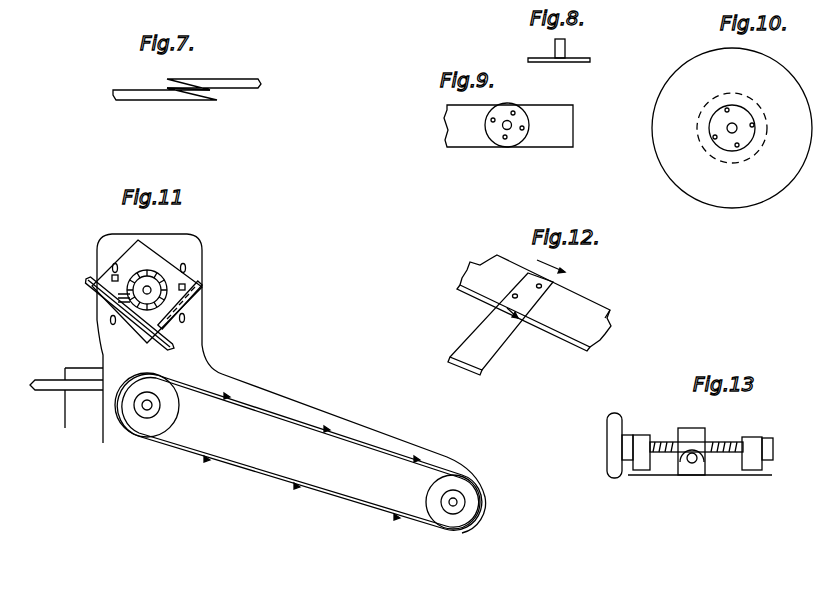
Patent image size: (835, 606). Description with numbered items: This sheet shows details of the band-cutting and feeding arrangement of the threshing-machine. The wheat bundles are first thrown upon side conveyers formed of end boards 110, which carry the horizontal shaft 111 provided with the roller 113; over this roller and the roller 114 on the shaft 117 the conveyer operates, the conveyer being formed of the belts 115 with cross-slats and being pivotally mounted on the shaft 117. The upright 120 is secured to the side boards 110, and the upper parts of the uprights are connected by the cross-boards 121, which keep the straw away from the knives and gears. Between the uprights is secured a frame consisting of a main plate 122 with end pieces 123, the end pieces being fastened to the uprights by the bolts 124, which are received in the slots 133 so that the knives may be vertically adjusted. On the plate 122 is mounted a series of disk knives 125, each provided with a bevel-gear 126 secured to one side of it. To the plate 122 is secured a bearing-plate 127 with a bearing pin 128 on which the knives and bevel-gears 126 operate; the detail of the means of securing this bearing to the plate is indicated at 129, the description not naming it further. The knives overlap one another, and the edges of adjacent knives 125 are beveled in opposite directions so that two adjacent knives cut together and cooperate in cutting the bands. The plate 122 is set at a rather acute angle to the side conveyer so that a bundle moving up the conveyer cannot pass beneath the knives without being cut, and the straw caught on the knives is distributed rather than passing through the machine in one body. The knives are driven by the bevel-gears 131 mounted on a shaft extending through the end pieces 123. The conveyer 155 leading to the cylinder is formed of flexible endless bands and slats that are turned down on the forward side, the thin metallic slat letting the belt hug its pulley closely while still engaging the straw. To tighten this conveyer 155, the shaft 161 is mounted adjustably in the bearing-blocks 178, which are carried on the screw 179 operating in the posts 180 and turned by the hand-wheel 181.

In FIG. 11, the end boards 110 is at (295, 410).
In FIG. 11, the horizontal shaft 111 is at (453, 507).
In FIG. 11, the roller 113 is at (465, 488).
In FIG. 11, the roller 114 is at (137, 427).
In FIG. 11, the belts 115 is at (293, 424).
In FIG. 11, the shaft 117 is at (153, 410).
In FIG. 11, the upright 120 is at (185, 247).
In FIG. 11, the cross-boards 121 is at (203, 287).
In FIG. 9, the main plate 122 is at (562, 128).
In FIG. 11, the main plate 122 is at (118, 320).
In FIG. 11, the end pieces 123 is at (183, 310).
In FIG. 11, the bolts 124 is at (110, 275).
In FIG. 7, the disk knives 125 is at (215, 82).
In FIG. 10, the disk knives 125 is at (732, 128).
In FIG. 11, the disk knives 125 is at (171, 342).
In FIG. 11, the bevel-gear 126 is at (118, 298).
In FIG. 8, the bearing-plate 127 is at (580, 63).
In FIG. 10, the bearing-plate 127 is at (718, 147).
In FIG. 8, the bearing pin 128 is at (565, 49).
In FIG. 9, the disc 129 is at (495, 138).
In FIG. 11, the bevel-gears 131 is at (150, 282).
In FIG. 11, the slots 133 is at (188, 268).
In FIG. 12, the conveyer 155 is at (580, 310).
In FIG. 13, the shaft 161 is at (693, 463).
In FIG. 12, the bearing-blocks 178 is at (465, 355).
In FIG. 13, the bearing-blocks 178 is at (697, 439).
In FIG. 13, the screw 179 is at (730, 438).
In FIG. 13, the posts 180 is at (762, 465).
In FIG. 13, the hand-wheel 181 is at (605, 458).